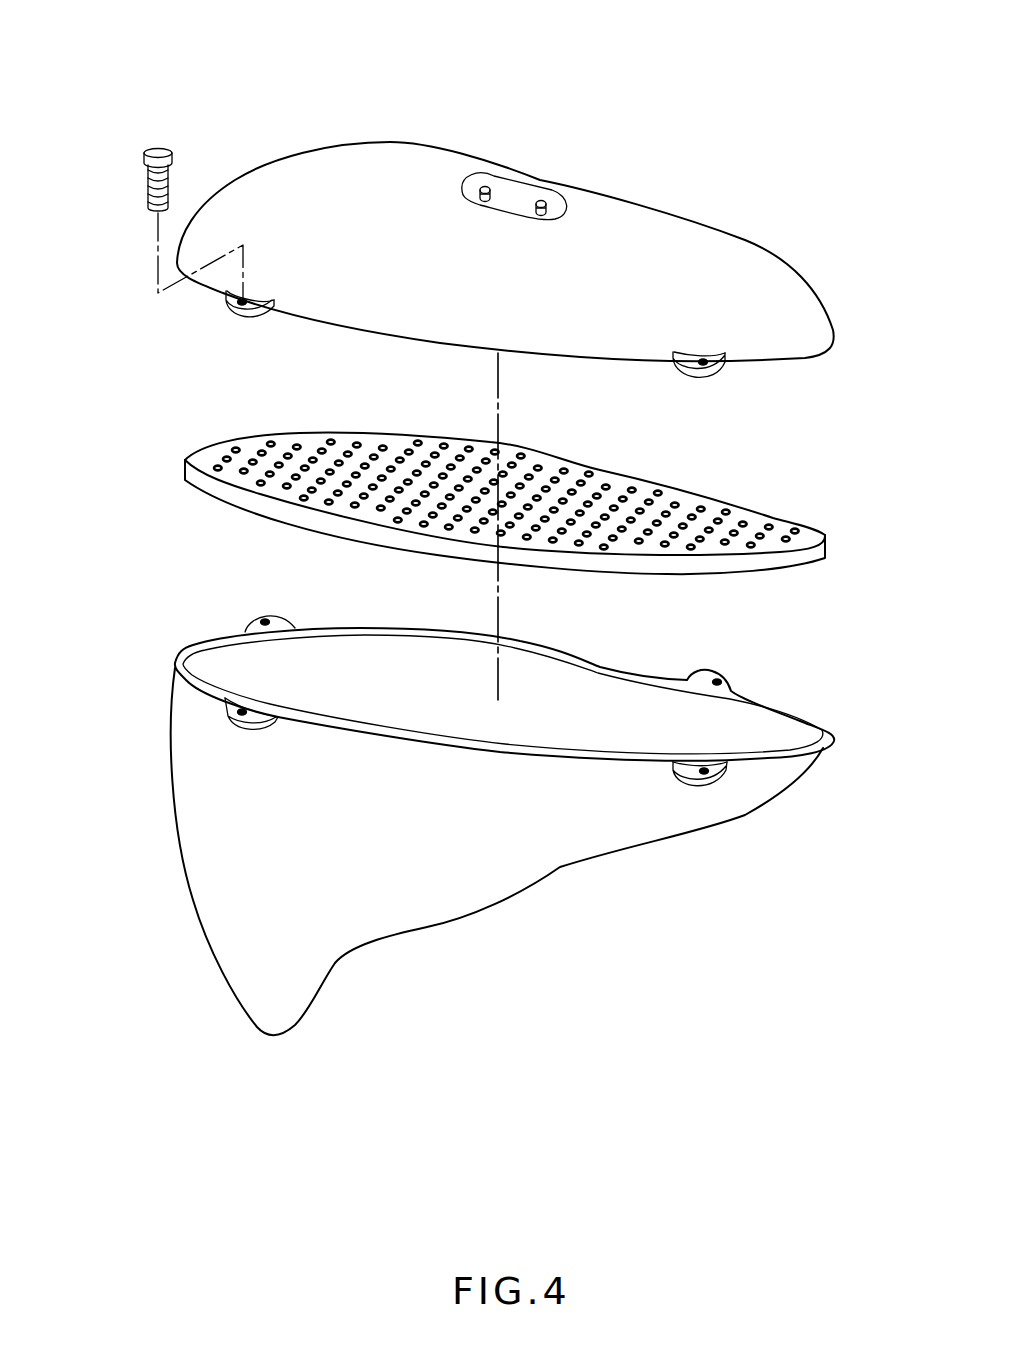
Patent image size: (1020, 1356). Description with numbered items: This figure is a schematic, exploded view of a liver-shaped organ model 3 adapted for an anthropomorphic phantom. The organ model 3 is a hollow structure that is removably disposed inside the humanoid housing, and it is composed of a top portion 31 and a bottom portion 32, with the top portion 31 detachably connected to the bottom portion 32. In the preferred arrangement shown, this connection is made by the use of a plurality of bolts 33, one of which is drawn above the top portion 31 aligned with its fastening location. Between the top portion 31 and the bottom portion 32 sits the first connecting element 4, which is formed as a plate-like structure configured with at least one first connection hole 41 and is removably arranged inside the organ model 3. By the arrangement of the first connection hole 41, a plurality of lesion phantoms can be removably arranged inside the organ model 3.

The organ model 3 is at (600, 120).
The top portion 31 is at (733, 265).
The bottom portion 32 is at (745, 728).
The bolts 33 is at (152, 183).
The first connecting element 4 is at (506, 478).
The first connection hole 41 is at (270, 442).